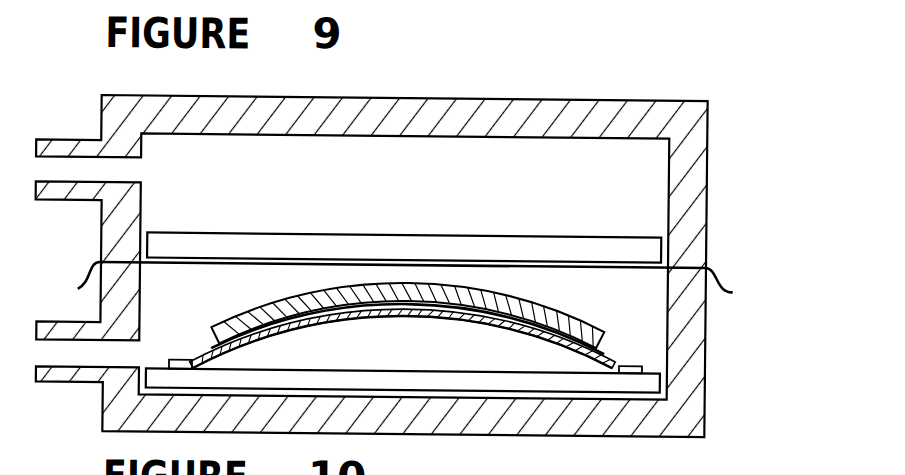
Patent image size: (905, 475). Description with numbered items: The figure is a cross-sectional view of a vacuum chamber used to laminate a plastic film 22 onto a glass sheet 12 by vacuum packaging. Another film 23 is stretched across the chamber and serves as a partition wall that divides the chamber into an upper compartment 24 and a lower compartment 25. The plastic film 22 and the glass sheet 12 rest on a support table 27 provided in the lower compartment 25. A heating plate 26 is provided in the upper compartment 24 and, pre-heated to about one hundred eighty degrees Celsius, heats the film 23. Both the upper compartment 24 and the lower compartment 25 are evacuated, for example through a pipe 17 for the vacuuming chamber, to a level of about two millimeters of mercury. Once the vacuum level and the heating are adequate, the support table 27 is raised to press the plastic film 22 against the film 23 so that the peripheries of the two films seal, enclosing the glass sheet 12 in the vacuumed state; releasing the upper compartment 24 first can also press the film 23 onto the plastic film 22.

The glass sheet 12 is at (587, 322).
The pipe for the vacuuming chamber 17 is at (65, 173).
The plastic film 22 is at (632, 371).
The another film 23 is at (706, 265).
The upper compartment 24 is at (395, 172).
The lower compartment 25 is at (170, 324).
The heating plate 26 is at (543, 248).
The support table 27 is at (513, 350).